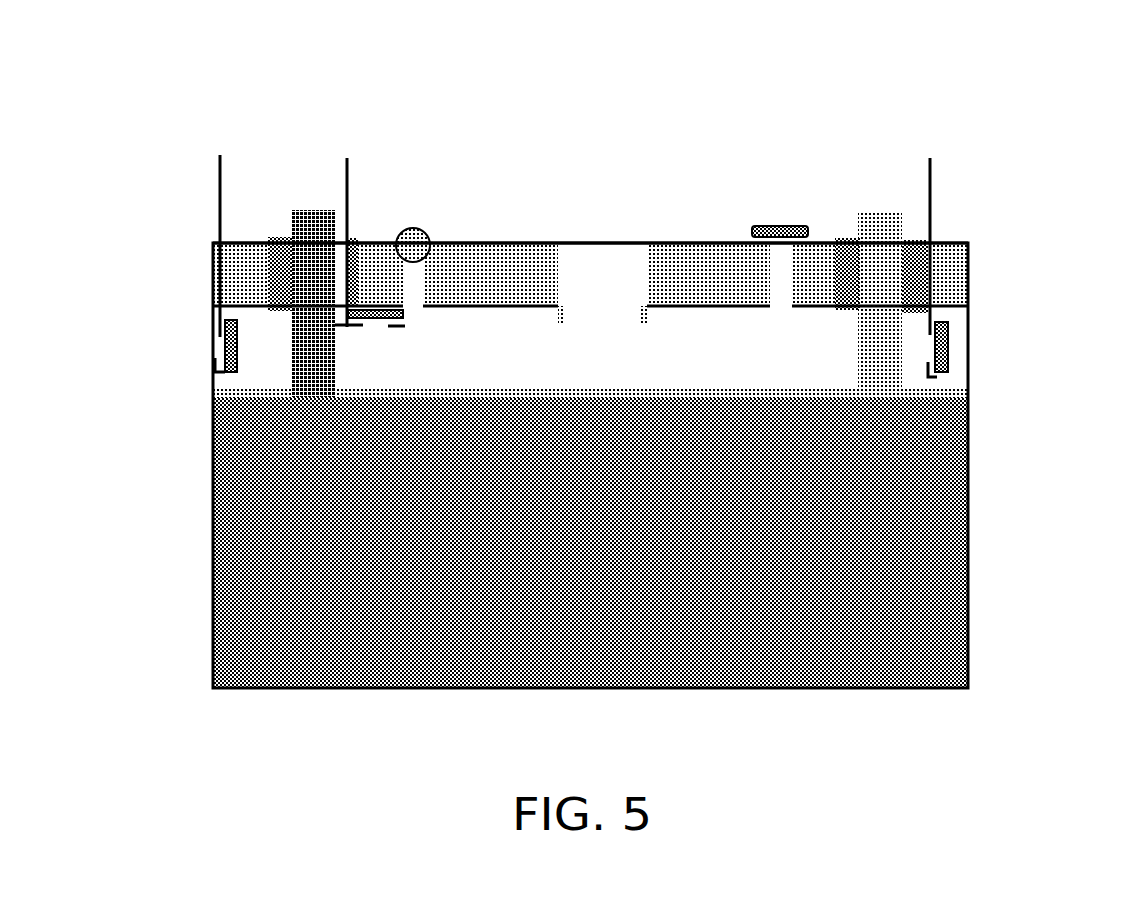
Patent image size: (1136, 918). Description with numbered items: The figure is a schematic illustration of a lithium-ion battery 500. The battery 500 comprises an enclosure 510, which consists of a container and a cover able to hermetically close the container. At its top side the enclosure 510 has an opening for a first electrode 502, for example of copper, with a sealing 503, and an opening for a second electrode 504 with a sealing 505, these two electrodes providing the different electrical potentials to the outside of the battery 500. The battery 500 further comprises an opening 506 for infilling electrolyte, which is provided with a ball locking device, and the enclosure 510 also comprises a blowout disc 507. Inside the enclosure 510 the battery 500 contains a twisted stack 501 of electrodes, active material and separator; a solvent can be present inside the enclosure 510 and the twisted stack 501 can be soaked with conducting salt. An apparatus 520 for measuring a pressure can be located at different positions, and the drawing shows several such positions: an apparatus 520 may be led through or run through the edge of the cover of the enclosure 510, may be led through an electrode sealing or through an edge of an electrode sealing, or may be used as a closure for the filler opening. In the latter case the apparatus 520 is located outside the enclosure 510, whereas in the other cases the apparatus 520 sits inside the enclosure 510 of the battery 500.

The lithium-ion battery 500 is at (580, 116).
The twisted stack 501 is at (824, 636).
The first electrode 502 is at (316, 210).
The sealing 503 is at (277, 232).
The second electrode 504 is at (889, 210).
The sealing 505 is at (845, 236).
The opening 506 is at (428, 233).
The blowout disc 507 is at (605, 240).
The enclosure 510 is at (980, 502).
The apparatus for measuring a pressure 520 is at (381, 302).